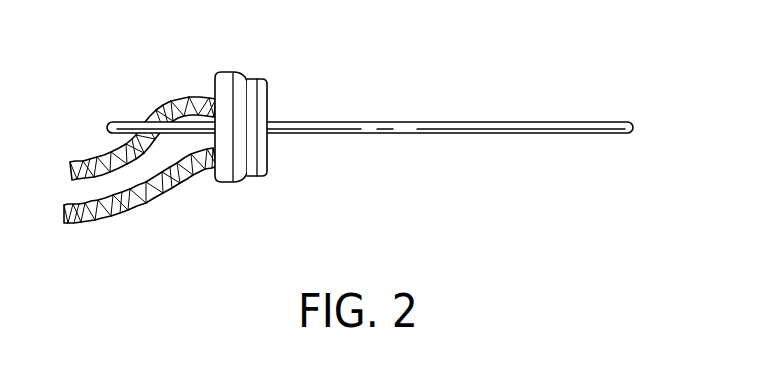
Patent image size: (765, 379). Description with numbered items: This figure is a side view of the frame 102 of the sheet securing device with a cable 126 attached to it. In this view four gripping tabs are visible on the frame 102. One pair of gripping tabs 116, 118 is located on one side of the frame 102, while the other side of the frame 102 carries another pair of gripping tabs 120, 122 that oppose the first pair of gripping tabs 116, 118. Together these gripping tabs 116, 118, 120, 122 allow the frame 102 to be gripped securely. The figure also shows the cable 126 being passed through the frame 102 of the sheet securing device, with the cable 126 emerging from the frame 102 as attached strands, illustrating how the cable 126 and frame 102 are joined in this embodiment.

The frame 102 is at (482, 128).
The gripping tab 116 is at (198, 143).
The gripping tab 118 is at (316, 101).
The gripping tab 120 is at (263, 157).
The gripping tab 122 is at (223, 172).
The cable 126 is at (105, 213).